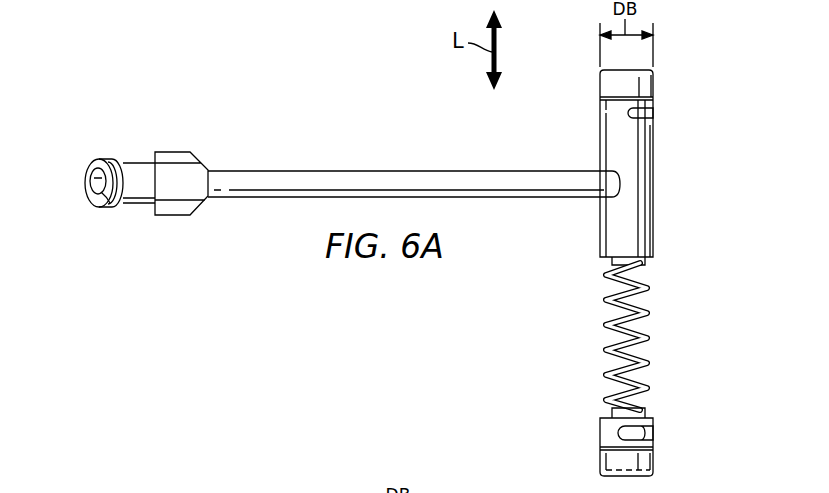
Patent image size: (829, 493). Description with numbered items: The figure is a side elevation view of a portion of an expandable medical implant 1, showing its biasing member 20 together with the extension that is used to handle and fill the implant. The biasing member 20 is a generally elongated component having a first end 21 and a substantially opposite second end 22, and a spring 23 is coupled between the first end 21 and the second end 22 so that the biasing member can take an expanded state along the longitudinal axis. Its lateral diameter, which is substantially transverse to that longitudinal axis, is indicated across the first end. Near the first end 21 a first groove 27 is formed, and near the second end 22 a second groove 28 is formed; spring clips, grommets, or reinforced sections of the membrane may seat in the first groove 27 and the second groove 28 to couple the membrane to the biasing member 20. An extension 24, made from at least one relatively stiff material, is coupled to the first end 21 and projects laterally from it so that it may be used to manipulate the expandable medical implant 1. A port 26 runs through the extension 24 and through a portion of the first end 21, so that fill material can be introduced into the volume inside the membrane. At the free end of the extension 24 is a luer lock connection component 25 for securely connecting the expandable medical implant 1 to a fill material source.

The expandable medical implant 1 is at (186, 66).
The biasing member 20 is at (653, 202).
The first end 21 is at (653, 139).
The second end 22 is at (653, 456).
The spring 23 is at (645, 333).
The extension 24 is at (318, 171).
The luer lock connection component 25 is at (131, 163).
The port 26 is at (92, 187).
The first groove 27 is at (600, 97).
The second groove 28 is at (600, 449).